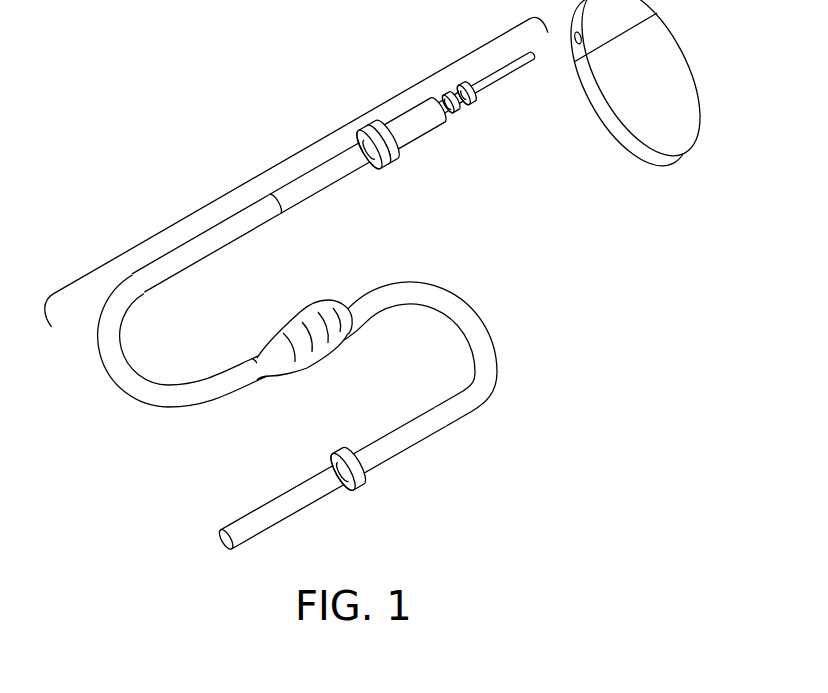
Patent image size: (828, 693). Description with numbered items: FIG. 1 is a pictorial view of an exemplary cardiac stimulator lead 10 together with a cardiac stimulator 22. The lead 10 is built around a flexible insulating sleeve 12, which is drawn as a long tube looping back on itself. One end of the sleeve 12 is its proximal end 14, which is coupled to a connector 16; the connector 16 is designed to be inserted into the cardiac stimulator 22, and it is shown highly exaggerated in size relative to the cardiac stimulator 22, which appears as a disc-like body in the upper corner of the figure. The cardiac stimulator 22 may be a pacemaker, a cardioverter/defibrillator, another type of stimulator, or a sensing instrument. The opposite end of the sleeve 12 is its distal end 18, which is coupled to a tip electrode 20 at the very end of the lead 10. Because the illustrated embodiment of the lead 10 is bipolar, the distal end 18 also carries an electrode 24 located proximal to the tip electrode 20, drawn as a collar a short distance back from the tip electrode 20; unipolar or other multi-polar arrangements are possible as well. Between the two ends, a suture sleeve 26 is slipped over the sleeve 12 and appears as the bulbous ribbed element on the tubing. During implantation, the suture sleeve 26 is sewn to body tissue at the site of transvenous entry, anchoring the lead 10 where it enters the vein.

The cardiac stimulator lead 10 is at (320, 142).
The flexible insulating sleeve 12 is at (113, 381).
The proximal end 14 is at (258, 229).
The connector 16 is at (348, 181).
The distal end 18 is at (307, 508).
The tip electrode 20 is at (221, 523).
The cardiac stimulator 22 is at (604, 123).
The electrode 24 is at (342, 452).
The suture sleeve 26 is at (292, 315).